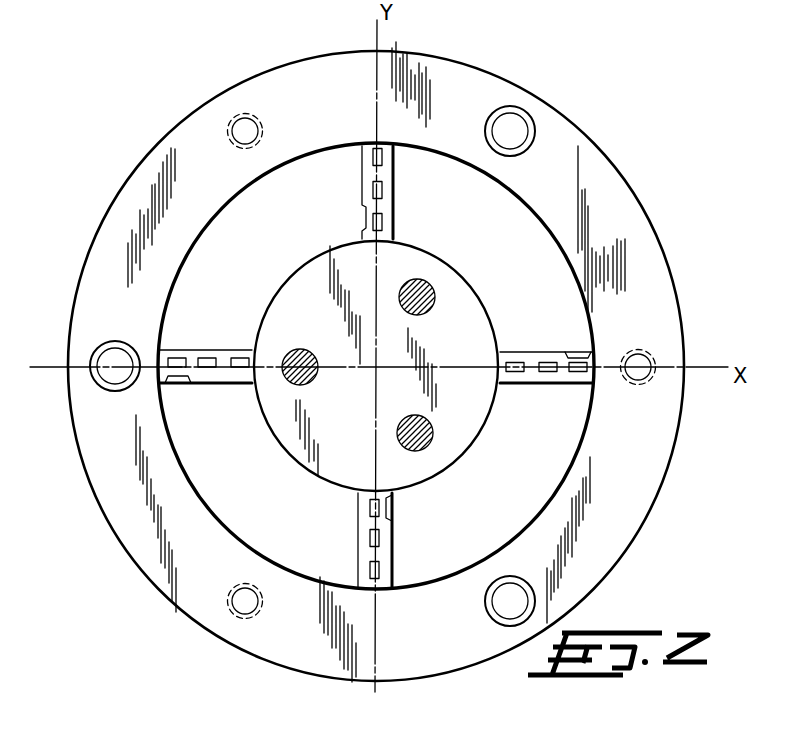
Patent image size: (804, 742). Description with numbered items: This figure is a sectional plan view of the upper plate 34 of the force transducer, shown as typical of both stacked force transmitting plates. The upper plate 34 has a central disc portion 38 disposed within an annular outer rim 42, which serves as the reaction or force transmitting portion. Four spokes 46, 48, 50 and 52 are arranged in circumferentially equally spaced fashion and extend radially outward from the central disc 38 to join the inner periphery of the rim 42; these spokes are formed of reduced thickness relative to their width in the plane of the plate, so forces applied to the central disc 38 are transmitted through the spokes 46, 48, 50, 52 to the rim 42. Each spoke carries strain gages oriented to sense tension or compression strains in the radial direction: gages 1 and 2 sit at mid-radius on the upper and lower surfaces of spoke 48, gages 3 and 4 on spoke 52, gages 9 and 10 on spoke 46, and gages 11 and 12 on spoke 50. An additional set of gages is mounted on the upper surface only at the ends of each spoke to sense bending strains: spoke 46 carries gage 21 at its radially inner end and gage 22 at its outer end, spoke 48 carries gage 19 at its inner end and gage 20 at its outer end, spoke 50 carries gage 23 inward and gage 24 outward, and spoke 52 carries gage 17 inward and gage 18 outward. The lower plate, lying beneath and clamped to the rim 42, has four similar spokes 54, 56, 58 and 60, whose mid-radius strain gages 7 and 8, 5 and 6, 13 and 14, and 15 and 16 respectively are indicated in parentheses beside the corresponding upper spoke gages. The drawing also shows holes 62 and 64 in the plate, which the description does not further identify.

The strain gage 1 is at (520, 345).
The strain gage 2 is at (537, 356).
The strain gage 3 is at (219, 339).
The strain gage 4 is at (207, 356).
The strain gage 5 is at (546, 324).
The strain gage 6 is at (575, 352).
The strain gage 7 is at (206, 399).
The strain gage 8 is at (182, 384).
The strain gage 9 is at (417, 184).
The strain gage 10 is at (384, 188).
The strain gage 11 is at (334, 530).
The strain gage 12 is at (368, 542).
The strain gage 13 is at (292, 192).
The strain gage 14 is at (362, 218).
The strain gage 15 is at (450, 537).
The strain gage 16 is at (392, 505).
The strain gage 17 is at (255, 371).
The strain gage 18 is at (157, 352).
The strain gage 19 is at (500, 355).
The strain gage 20 is at (572, 385).
The strain gage 21 is at (381, 232).
The strain gage 22 is at (370, 152).
The strain gage 23 is at (368, 505).
The strain gage 24 is at (380, 570).
The upper plate 34 is at (344, 362).
The central disc portion 38 is at (352, 430).
The annular outer rim 42 is at (132, 562).
The spoke 46 is at (393, 205).
The spoke 48 is at (504, 386).
The spoke 50 is at (358, 555).
The spoke 52 is at (178, 348).
The spoke 54 is at (206, 399).
The spoke 56 is at (546, 324).
The spoke 58 is at (292, 192).
The spoke 60 is at (450, 537).
The mounting hole 62 is at (240, 120).
The pin hole 64 is at (298, 352).